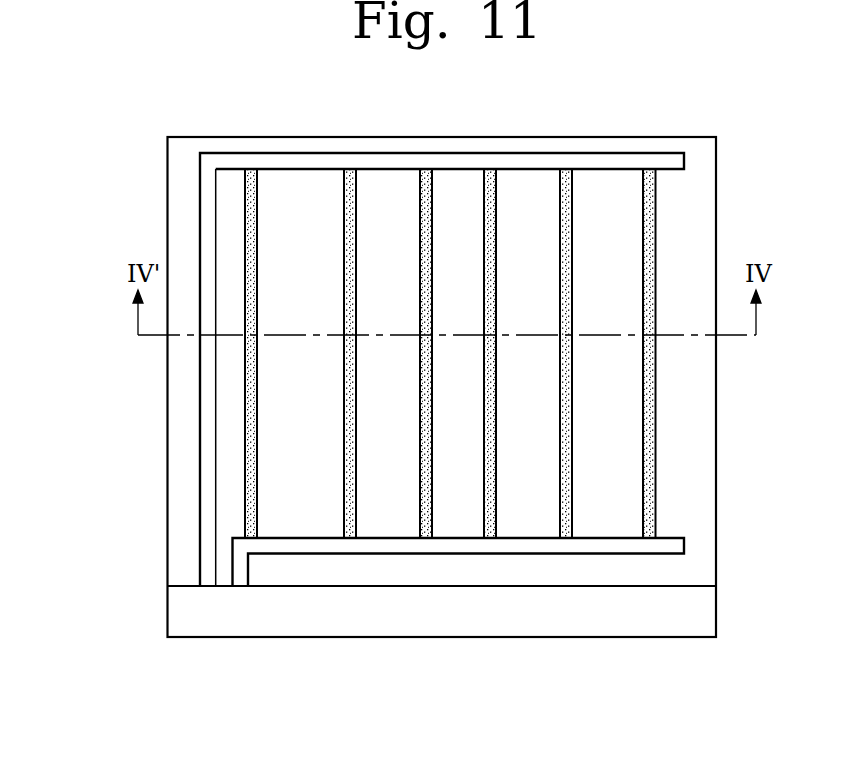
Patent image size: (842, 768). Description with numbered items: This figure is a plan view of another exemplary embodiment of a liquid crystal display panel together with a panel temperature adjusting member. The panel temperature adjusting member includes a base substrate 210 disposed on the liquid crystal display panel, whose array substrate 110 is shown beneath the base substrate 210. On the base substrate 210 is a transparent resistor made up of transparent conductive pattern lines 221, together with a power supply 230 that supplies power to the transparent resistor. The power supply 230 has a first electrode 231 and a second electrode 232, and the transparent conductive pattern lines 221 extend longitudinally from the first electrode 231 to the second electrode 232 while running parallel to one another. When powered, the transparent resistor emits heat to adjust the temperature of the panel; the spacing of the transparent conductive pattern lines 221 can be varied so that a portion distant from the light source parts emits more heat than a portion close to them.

The array substrate 110 is at (177, 608).
The base substrate 210 is at (181, 397).
The transparent conductive pattern lines 221 is at (249, 462).
The power supply 230 is at (354, 369).
The first electrode 231 is at (205, 517).
The second electrode 232 is at (239, 565).